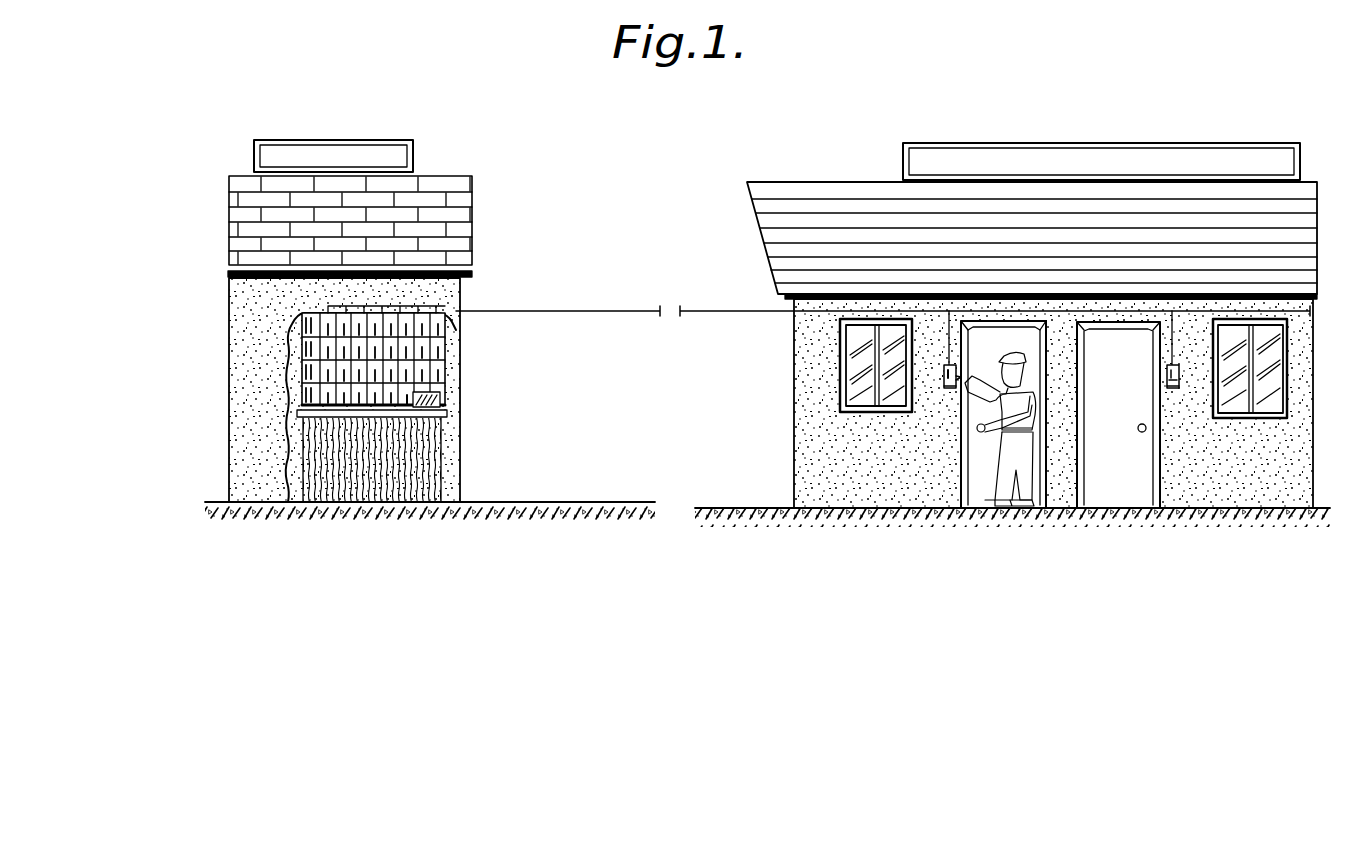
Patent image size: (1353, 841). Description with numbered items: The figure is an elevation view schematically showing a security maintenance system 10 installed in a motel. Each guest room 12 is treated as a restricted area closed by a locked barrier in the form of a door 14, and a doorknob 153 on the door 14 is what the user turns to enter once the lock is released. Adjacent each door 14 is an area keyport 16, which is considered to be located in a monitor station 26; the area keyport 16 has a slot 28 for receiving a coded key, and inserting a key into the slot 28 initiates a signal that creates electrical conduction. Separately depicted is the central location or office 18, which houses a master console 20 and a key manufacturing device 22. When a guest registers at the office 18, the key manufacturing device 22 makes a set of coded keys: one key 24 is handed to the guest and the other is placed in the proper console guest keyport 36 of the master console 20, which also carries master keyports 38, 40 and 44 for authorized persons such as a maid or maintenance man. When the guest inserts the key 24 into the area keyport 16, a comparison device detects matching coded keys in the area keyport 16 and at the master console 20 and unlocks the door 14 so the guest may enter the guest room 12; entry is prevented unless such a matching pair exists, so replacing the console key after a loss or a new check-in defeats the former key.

The security maintenance system 10 is at (790, 403).
The guest room 12 is at (905, 488).
The door 14 is at (975, 495).
The area keyport 16 is at (950, 363).
The office 18 is at (422, 420).
The master console 20 is at (338, 416).
The key manufacturing device 22 is at (440, 396).
The coded key 24 is at (962, 379).
The monitor station 26 is at (948, 388).
The slot 28 is at (946, 372).
The guest keyport 36 is at (445, 330).
The master keyport 38 is at (305, 322).
The master keyport 40 is at (305, 372).
The master keyport 44 is at (305, 393).
The doorknob 153 is at (1146, 430).